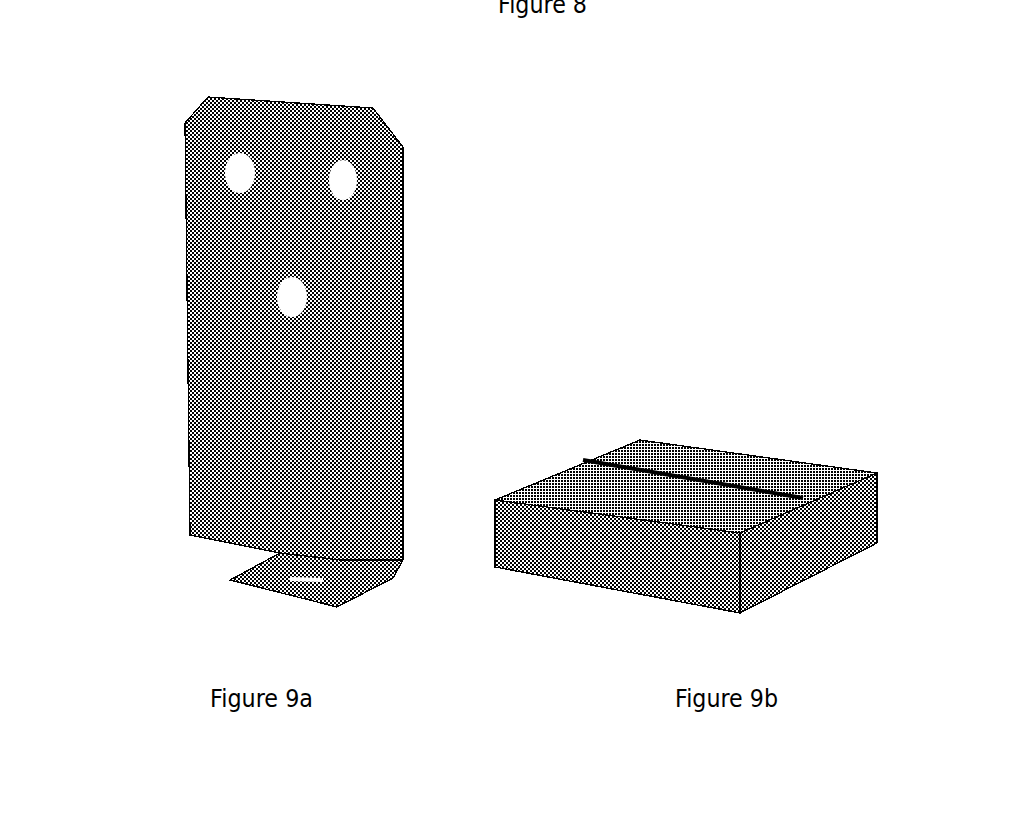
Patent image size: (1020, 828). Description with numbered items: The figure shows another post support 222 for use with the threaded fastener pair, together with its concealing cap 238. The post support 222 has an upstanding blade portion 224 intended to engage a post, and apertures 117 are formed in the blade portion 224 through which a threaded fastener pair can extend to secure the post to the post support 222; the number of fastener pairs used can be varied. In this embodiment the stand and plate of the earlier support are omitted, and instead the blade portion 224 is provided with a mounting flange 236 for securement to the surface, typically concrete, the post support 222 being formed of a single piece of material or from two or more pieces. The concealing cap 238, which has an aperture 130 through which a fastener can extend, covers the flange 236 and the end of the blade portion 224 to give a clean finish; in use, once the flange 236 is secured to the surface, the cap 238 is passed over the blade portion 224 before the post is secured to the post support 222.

In FIG. 9A, the post support 222 is at (325, 352).
In FIG. 9A, the blade portion 224 is at (395, 332).
In FIG. 9A, the apertures 117 is at (287, 280).
In FIG. 9A, the mounting flange 236 is at (237, 580).
In FIG. 9B, the concealing cap 238 is at (727, 448).
In FIG. 9B, the aperture 130 is at (745, 482).